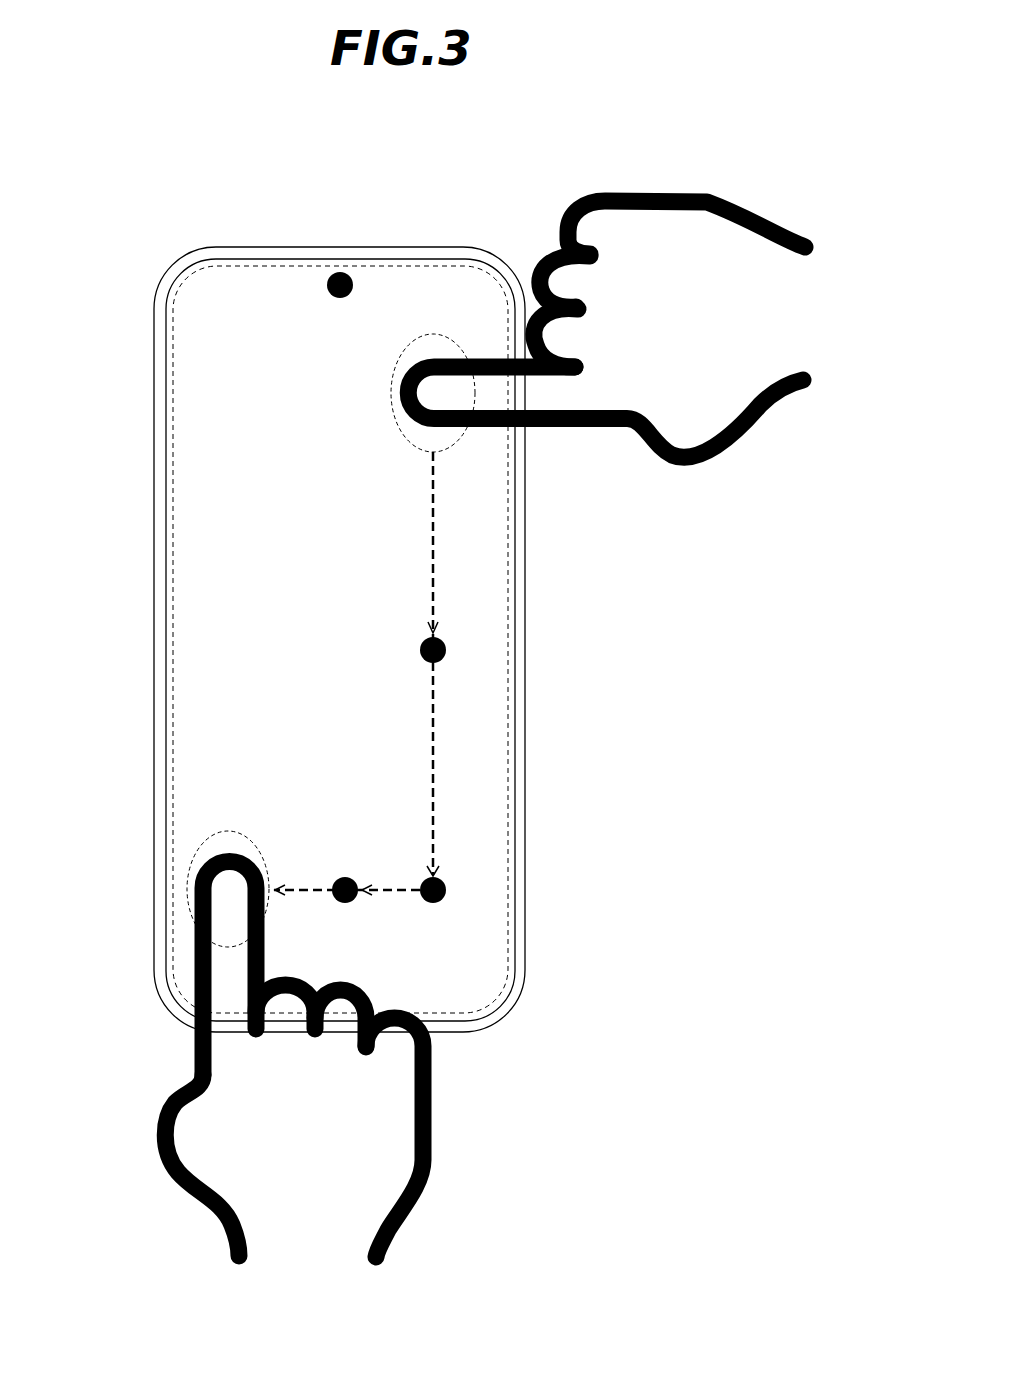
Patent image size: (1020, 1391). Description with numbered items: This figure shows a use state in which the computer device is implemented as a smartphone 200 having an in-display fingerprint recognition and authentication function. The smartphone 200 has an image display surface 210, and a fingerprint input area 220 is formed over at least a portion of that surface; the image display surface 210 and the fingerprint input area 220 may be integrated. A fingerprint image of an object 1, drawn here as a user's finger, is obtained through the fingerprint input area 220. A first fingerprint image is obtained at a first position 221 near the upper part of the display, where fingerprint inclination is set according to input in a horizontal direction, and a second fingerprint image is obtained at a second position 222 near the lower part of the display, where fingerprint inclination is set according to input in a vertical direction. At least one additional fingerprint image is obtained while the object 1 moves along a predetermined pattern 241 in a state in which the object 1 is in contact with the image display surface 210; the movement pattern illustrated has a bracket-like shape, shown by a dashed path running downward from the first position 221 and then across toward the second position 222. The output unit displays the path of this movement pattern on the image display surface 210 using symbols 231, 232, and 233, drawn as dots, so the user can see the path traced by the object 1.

The object 1 is at (668, 193).
The smartphone 200 is at (137, 322).
The image display surface 210 is at (450, 490).
The fingerprint input area 220 is at (552, 492).
The first position 221 is at (434, 334).
The second position 222 is at (188, 890).
The symbol 231 is at (446, 648).
The symbol 232 is at (446, 884).
The symbol 233 is at (350, 900).
The predetermined pattern 241 is at (435, 578).